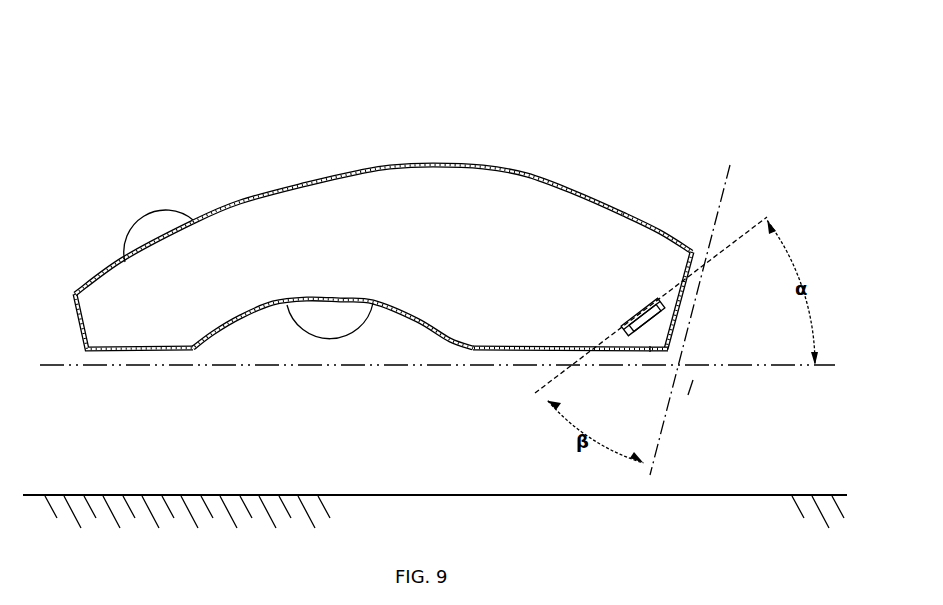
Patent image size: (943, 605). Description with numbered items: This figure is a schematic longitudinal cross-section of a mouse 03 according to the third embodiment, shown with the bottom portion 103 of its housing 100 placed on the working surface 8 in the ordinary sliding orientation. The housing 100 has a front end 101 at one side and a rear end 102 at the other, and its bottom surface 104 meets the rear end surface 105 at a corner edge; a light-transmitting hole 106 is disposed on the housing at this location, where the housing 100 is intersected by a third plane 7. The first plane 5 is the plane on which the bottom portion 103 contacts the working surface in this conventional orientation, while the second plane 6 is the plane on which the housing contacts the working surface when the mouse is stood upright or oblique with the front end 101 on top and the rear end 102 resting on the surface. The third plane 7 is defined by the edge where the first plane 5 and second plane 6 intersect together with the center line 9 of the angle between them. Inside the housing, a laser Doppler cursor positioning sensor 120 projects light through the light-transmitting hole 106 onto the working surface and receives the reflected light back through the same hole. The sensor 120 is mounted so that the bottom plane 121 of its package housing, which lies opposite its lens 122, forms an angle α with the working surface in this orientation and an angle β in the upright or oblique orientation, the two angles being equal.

The mouse 03 is at (410, 90).
The housing 100 is at (553, 175).
The front end 101 is at (108, 272).
The rear end 102 is at (632, 211).
The bottom portion 103 is at (448, 351).
The bottom surface 104 is at (503, 352).
The rear end surface 105 is at (686, 290).
The light-transmitting hole 106 is at (671, 349).
The laser Doppler cursor positioning sensor 120 is at (632, 318).
The bottom plane of the package housing 121 is at (656, 298).
The lens 122 is at (670, 318).
The first plane 5 is at (765, 364).
The second plane 6 is at (726, 184).
The third plane 7 is at (665, 354).
The working surface 8 is at (193, 494).
The center line 9 is at (693, 382).